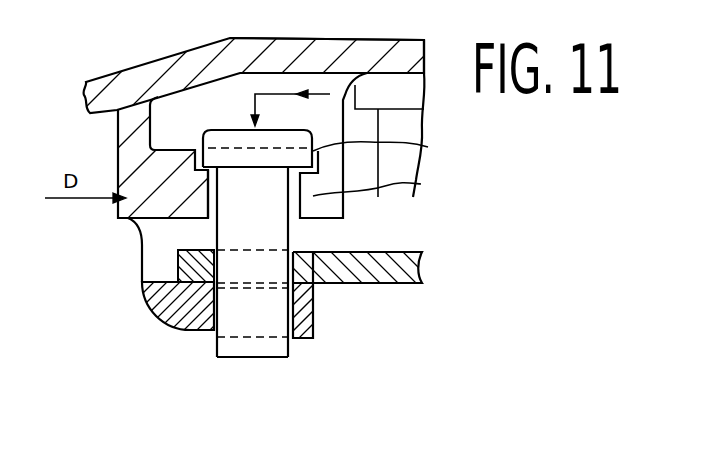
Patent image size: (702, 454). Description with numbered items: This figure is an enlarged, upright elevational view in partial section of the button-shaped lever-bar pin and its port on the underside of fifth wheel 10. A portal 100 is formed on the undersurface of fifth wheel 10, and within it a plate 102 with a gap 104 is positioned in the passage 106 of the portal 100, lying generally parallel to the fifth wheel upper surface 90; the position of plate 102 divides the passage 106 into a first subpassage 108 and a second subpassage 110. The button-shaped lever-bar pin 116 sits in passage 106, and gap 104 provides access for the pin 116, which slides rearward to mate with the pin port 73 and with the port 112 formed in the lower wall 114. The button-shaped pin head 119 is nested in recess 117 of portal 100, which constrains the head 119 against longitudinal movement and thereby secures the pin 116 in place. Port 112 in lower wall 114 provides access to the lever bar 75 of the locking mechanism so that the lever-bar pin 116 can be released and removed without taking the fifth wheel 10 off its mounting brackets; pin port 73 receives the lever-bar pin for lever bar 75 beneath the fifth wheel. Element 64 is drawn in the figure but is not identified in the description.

The fifth wheel 10 is at (257, 26).
The panel 64 is at (162, 55).
The fifth wheel upper surface 90 is at (368, 36).
The pin port 73 is at (297, 249).
The lever bar 75 is at (400, 285).
The portal 100 is at (120, 230).
The plate 102 is at (386, 193).
The gap 104 is at (217, 185).
The passage 106 is at (391, 140).
The first subpassage 108 is at (170, 125).
The second subpassage 110 is at (156, 263).
The port 112 is at (215, 337).
The lower wall 114 is at (166, 314).
The lever-bar pin 116 is at (205, 233).
The recess 117 is at (313, 150).
The pin head 119 is at (235, 148).